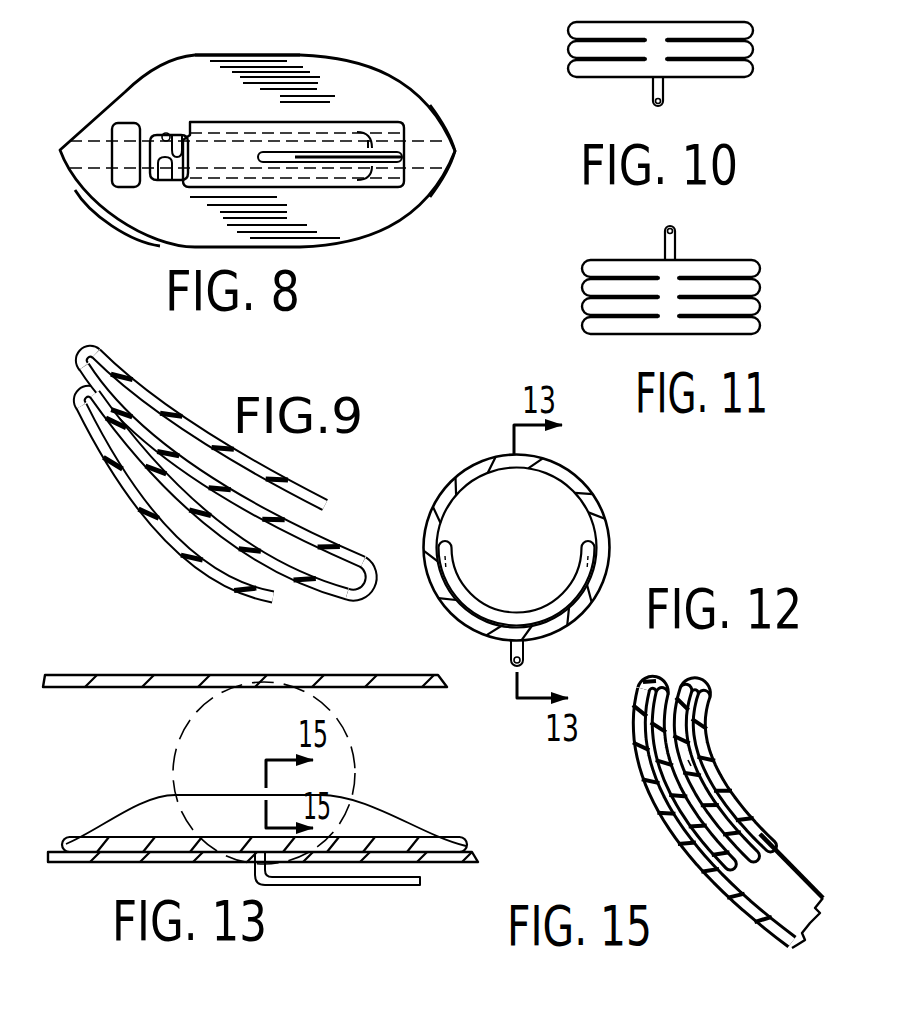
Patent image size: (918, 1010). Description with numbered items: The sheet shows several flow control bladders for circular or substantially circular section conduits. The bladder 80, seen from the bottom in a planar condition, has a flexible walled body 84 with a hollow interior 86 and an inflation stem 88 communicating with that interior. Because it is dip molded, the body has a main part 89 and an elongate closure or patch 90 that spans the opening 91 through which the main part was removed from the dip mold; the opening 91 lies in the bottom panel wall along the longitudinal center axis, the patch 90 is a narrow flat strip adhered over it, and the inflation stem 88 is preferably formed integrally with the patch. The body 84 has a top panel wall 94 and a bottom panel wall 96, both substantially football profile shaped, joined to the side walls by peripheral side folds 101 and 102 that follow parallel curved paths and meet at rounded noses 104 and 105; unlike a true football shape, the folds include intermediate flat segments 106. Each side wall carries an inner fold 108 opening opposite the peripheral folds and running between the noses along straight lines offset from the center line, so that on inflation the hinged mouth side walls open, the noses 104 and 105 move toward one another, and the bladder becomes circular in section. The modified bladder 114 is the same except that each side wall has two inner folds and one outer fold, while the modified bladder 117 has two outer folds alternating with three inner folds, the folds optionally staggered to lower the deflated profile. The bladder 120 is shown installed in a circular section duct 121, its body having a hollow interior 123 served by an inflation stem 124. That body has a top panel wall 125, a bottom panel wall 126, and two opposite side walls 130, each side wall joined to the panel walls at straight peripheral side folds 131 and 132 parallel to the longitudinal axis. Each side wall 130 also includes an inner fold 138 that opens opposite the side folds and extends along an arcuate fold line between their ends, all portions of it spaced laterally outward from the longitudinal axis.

In FIG. 8, the flow control bladder 80 is at (100, 83).
In FIG. 8, the flexible walled body 84 is at (222, 52).
In FIG. 9, the hollow interior 86 is at (276, 507).
In FIG. 8, the inflation stem 88 is at (326, 163).
In FIG. 8, the main part 89 is at (145, 210).
In FIG. 8, the closure or patch 90 is at (201, 122).
In FIG. 8, the opening 91 is at (165, 133).
In FIG. 9, the top panel wall 94 is at (323, 503).
In FIG. 9, the bottom panel wall 96 is at (230, 580).
In FIG. 9, the peripheral side fold 101 is at (86, 351).
In FIG. 9, the peripheral side fold 102 is at (75, 393).
In FIG. 8, the nose 104 is at (61, 153).
In FIG. 8, the nose 105 is at (457, 150).
In FIG. 8, the intermediate flat segments 106 is at (300, 55).
In FIG. 8, the inner fold 108 is at (185, 134).
In FIG. 9, the inner fold 108 is at (381, 582).
In FIG. 10, the modified bladder 114 is at (566, 66).
In FIG. 11, the modified bladder 117 is at (748, 340).
In FIG. 12, the flow control bladder 120 is at (507, 588).
In FIG. 13, the flow control bladder 120 is at (138, 803).
In FIG. 12, the circular section duct 121 is at (594, 490).
In FIG. 15, the hollow interior 123 is at (765, 890).
In FIG. 12, the inflation stem 124 is at (525, 656).
In FIG. 13, the inflation stem 124 is at (368, 886).
In FIG. 15, the top panel wall 125 is at (740, 808).
In FIG. 15, the bottom panel wall 126 is at (748, 922).
In FIG. 15, the side wall 130 is at (690, 763).
In FIG. 15, the peripheral side fold 131 is at (694, 680).
In FIG. 15, the peripheral side fold 132 is at (648, 680).
In FIG. 15, the inner fold 138 is at (758, 837).